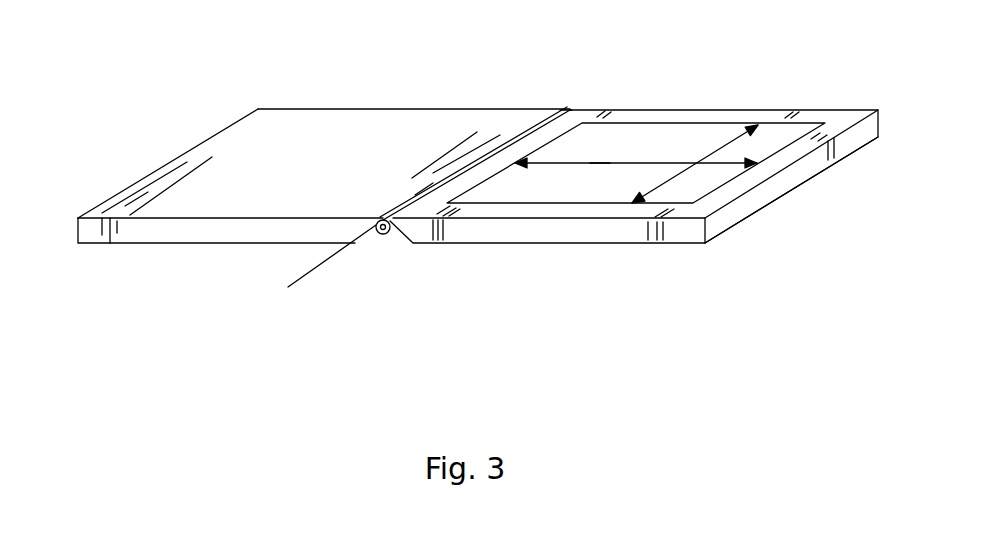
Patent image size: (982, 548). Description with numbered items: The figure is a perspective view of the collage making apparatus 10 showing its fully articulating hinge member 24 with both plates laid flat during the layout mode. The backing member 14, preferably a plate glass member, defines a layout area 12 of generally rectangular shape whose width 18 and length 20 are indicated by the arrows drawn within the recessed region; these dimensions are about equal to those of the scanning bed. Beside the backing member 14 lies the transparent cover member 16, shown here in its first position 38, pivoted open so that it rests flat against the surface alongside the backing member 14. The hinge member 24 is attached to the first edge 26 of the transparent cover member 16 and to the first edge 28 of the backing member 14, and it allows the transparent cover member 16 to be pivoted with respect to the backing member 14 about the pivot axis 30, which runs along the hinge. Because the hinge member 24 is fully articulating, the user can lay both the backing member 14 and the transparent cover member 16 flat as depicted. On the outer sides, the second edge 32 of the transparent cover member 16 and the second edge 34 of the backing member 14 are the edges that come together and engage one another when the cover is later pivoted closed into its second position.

The collage making apparatus 10 is at (177, 60).
The layout area 12 is at (653, 143).
The backing member 14 is at (634, 164).
The transparent cover member 16 is at (309, 147).
The width 18 is at (722, 143).
The length 20 is at (598, 163).
The hinge member 24 is at (393, 235).
The first edge of transparent cover member 26 is at (491, 134).
The first edge of backing member 28 is at (572, 112).
The pivot axis 30 is at (330, 260).
The second edge of transparent cover member 32 is at (113, 195).
The second edge of backing member 34 is at (743, 220).
The first position 38 is at (353, 108).